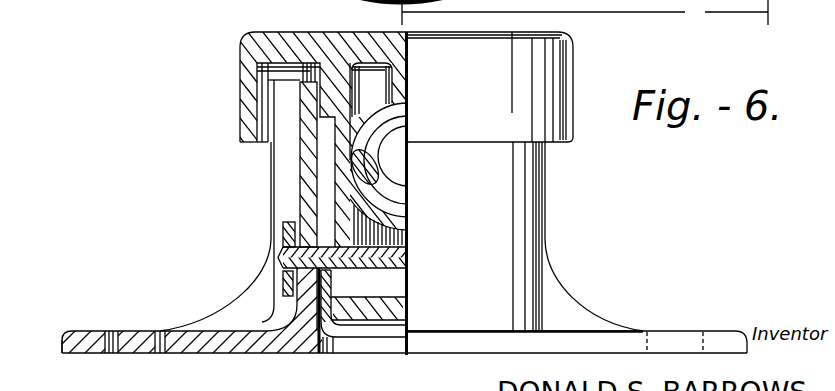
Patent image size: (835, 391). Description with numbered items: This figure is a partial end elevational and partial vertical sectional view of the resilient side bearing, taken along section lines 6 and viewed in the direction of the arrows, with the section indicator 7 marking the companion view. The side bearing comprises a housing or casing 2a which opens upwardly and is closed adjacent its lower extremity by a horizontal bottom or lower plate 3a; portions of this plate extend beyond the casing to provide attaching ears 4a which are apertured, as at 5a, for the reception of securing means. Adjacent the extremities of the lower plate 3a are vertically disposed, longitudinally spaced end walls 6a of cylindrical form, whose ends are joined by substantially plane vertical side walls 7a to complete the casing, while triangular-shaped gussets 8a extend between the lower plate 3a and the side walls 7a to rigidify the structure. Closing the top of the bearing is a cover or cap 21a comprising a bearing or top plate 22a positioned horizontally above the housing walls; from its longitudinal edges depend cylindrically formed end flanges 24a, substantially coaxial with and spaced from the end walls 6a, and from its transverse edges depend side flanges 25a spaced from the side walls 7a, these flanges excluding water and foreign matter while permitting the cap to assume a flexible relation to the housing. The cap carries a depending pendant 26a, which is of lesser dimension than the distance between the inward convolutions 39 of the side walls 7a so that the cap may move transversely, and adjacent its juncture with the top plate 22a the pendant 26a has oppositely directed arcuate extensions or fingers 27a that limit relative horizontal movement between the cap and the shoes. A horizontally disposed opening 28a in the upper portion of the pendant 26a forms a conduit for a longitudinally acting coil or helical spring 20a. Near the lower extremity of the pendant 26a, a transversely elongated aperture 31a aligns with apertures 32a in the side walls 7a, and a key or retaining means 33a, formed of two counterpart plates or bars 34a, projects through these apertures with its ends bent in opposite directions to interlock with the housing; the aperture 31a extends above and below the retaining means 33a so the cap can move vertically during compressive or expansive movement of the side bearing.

The housing or casing 2a is at (566, 290).
The bottom or lower plate 3a is at (228, 350).
The attaching ears 4a is at (84, 348).
The apertures 5a is at (136, 334).
The end walls 6a is at (302, 195).
The side walls 7a is at (278, 162).
The gussets 8a is at (254, 296).
The coil or helical spring 20a is at (402, 110).
The cover or cap 21a is at (460, 102).
The bearing or top plate 22a is at (320, 64).
The end flanges 24a is at (449, 100).
The side flanges 25a is at (239, 107).
The pendant 26a is at (367, 318).
The arcuate extensions or fingers 27a is at (316, 72).
The opening 28a is at (397, 157).
The elongated aperture 31a is at (396, 290).
The apertures 32a is at (295, 317).
The key or retaining means 33a is at (404, 254).
The counterpart plates or bars 34a is at (283, 247).
The convolutions 39 is at (298, 188).
The section line 6 is at (588, 26).
The section line 7 view arrow 7 is at (393, 23).